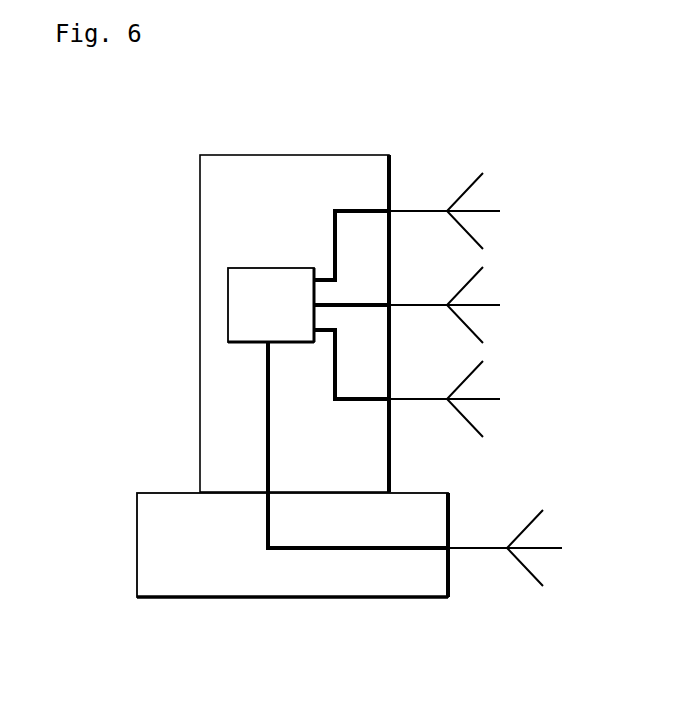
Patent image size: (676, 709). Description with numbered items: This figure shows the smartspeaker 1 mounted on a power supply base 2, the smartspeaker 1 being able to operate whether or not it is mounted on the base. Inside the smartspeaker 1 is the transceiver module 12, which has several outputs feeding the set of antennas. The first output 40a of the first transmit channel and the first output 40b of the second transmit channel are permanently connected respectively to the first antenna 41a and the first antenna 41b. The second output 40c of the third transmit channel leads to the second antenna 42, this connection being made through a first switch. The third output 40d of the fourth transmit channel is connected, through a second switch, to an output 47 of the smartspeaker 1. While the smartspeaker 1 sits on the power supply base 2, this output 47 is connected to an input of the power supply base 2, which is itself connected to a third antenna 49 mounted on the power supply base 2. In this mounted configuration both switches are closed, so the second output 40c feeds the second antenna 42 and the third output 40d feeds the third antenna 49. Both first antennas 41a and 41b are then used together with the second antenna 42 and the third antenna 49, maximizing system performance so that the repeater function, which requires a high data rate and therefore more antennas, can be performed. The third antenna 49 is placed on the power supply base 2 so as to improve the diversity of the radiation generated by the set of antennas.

The smartspeaker 1 is at (316, 155).
The power supply base 2 is at (137, 547).
The transceiver module 12 is at (228, 283).
The first output 40a is at (318, 270).
The first output 40b is at (318, 302).
The second output 40c is at (319, 345).
The third output 40d is at (265, 348).
The first antenna 41a is at (422, 209).
The first antenna 41b is at (422, 303).
The second antenna 42 is at (425, 397).
The output 47 is at (270, 488).
The third antenna 49 is at (487, 546).